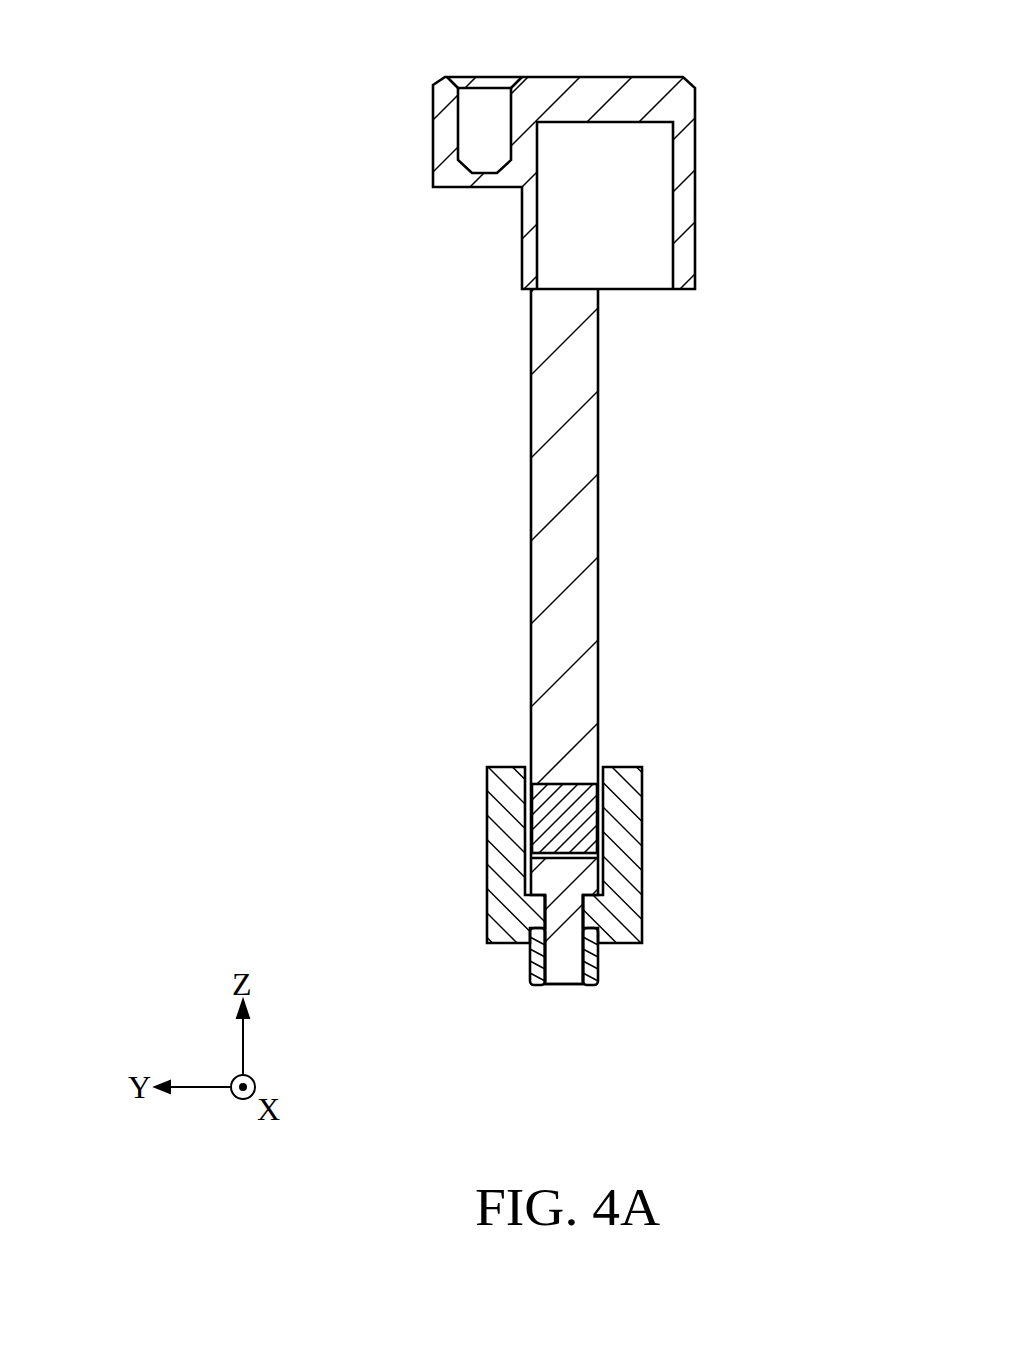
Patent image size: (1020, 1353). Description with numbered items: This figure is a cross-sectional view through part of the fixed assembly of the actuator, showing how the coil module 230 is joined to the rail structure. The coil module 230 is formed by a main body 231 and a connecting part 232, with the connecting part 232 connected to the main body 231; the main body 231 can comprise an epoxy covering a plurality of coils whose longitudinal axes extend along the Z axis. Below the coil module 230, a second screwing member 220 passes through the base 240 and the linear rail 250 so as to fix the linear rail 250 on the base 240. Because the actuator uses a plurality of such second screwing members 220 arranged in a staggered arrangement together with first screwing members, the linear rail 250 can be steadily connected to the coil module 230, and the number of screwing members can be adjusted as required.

The second screwing member 220 is at (563, 940).
The coil module 230 is at (382, 622).
The main body 231 is at (565, 640).
The connecting part 232 is at (565, 818).
The base 240 is at (620, 910).
The linear rail 250 is at (588, 965).